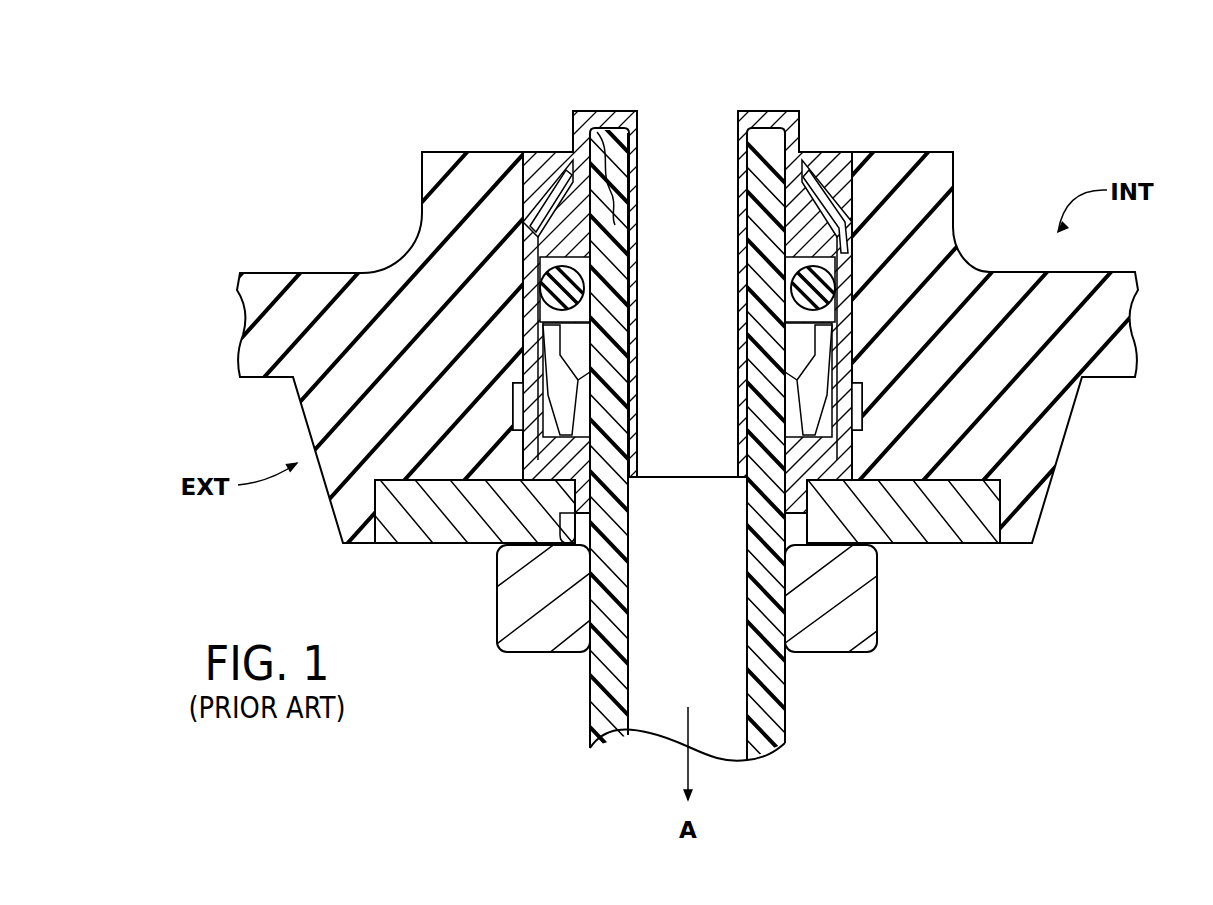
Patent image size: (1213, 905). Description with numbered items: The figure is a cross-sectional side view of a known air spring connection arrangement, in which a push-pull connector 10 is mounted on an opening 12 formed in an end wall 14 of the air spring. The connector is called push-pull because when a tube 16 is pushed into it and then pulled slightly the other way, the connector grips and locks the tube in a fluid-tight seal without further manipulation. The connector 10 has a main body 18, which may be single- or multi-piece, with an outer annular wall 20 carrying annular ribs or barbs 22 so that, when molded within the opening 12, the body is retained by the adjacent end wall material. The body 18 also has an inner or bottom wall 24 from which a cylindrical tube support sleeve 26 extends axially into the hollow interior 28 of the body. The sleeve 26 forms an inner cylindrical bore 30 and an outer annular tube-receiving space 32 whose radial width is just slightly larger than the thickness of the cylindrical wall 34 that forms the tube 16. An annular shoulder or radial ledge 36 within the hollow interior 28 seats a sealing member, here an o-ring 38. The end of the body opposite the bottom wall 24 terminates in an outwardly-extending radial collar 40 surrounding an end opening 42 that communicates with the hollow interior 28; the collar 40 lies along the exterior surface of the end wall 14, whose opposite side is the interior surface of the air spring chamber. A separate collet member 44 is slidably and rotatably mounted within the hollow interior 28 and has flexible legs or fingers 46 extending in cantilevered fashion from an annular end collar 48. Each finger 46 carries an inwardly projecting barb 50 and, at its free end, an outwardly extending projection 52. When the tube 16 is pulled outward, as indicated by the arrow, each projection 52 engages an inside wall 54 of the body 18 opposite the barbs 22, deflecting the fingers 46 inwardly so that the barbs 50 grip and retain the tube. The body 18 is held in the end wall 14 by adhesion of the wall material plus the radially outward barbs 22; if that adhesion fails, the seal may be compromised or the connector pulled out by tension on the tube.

The push-pull connector 10 is at (606, 425).
The opening 12 is at (378, 532).
The end wall 14 is at (256, 358).
The tube 16 is at (677, 458).
The main body 18 is at (681, 332).
The outer annular wall 20 is at (523, 448).
The annular ribs or barbs 22 is at (858, 420).
The inner or bottom wall 24 is at (612, 108).
The tube support sleeve 26 is at (708, 487).
The hollow interior 28 is at (810, 388).
The inner cylindrical bore 30 is at (717, 152).
The outer annular tube-receiving space 32 is at (618, 167).
The cylindrical wall 34 is at (770, 727).
The annular shoulder or radial ledge 36 is at (832, 256).
The o-ring 38 is at (558, 275).
The radial collar 40 is at (976, 537).
The end opening 42 is at (567, 513).
The collet member 44 is at (727, 619).
The flexible legs or fingers 46 is at (592, 378).
The annular end collar 48 is at (857, 600).
The inwardly projecting barb 50 is at (588, 345).
The outwardly extending projection 52 is at (558, 343).
The inside wall 54 is at (560, 398).